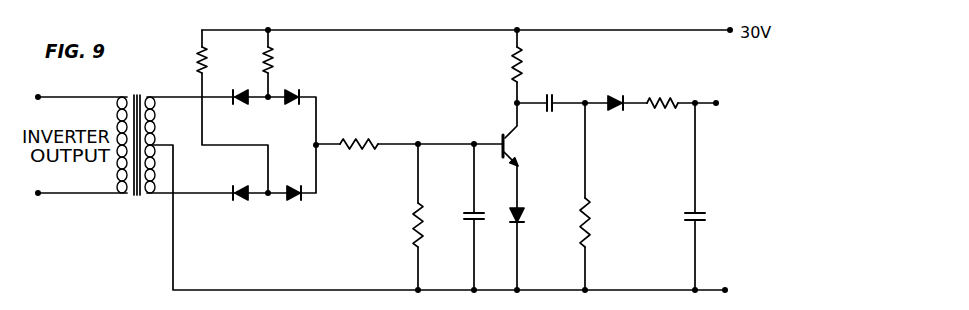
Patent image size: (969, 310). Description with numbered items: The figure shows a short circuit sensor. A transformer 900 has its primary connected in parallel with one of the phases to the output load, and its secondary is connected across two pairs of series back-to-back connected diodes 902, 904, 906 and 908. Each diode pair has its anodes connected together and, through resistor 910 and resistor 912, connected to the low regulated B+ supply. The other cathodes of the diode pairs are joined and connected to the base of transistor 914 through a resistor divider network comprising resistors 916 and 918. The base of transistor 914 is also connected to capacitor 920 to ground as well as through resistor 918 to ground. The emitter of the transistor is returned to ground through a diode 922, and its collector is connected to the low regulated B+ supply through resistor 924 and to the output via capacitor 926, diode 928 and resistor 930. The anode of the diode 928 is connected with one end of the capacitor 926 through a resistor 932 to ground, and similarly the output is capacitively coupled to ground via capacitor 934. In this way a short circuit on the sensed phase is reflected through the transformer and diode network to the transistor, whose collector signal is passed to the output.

The transformer 900 is at (149, 79).
The diode 902 is at (237, 106).
The diode 904 is at (293, 106).
The diode 906 is at (239, 203).
The diode 908 is at (300, 203).
The resistor 910 is at (275, 60).
The resistor 912 is at (207, 61).
The transistor 914 is at (513, 143).
The resistor 916 is at (355, 138).
The resistor 918 is at (410, 223).
The capacitor 920 is at (464, 210).
The diode 922 is at (524, 215).
The resistor 924 is at (510, 60).
The capacitor 926 is at (553, 96).
The diode 928 is at (622, 96).
The resistor 930 is at (665, 97).
The resistor 932 is at (590, 219).
The capacitor 934 is at (705, 218).